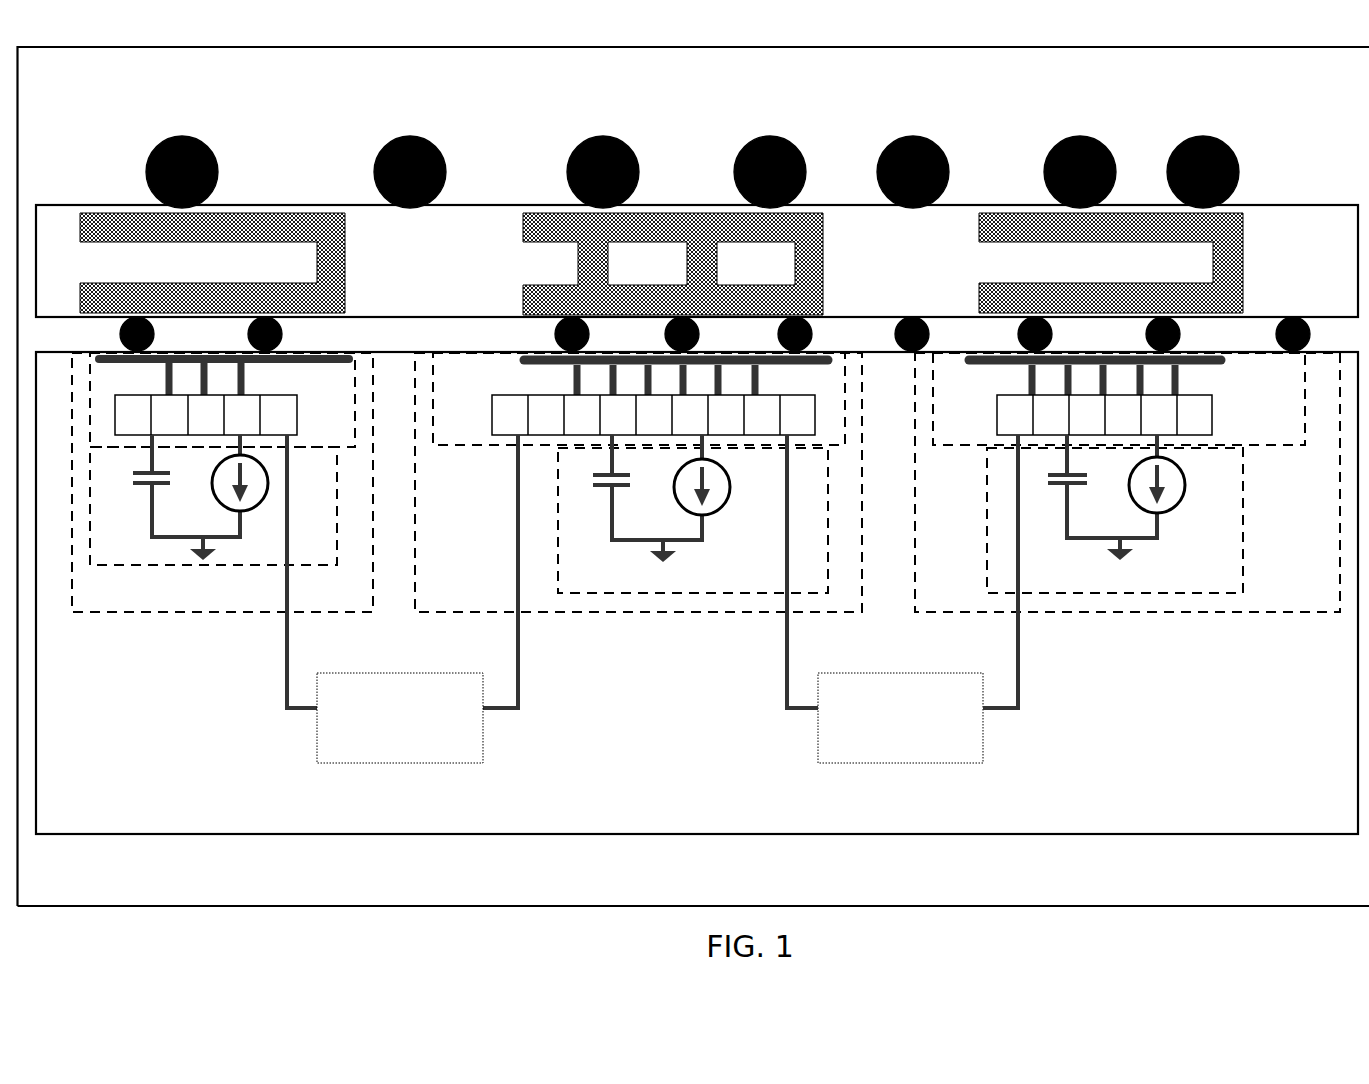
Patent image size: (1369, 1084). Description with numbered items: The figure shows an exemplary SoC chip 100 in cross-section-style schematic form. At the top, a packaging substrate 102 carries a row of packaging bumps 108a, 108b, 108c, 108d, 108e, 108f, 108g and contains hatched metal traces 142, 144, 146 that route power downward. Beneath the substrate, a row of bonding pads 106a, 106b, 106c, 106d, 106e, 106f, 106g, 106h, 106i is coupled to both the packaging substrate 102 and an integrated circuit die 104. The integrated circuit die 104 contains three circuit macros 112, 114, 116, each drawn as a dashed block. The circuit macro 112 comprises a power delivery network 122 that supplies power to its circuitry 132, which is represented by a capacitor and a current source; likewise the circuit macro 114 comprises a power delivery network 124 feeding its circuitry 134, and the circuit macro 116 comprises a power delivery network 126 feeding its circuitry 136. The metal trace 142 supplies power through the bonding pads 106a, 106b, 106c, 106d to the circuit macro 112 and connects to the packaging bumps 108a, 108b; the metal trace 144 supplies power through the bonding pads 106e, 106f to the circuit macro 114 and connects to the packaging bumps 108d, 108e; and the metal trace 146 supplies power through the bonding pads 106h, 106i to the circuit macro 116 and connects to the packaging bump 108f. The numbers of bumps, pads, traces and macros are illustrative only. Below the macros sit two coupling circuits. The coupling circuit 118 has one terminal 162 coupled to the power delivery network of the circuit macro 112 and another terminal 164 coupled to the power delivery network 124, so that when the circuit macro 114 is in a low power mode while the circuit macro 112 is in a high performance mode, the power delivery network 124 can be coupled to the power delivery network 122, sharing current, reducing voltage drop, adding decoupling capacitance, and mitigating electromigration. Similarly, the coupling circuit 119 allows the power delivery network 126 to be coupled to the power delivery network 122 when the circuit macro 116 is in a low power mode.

The SoC chip 100 is at (683, 891).
The packaging substrate 102 is at (886, 284).
The integrated circuit die 104 is at (683, 810).
The bonding pad 106a is at (554, 334).
The bonding pad 106b is at (664, 334).
The bonding pad 106c is at (777, 334).
The bonding pad 106d is at (894, 334).
The bonding pad 106e is at (1017, 334).
The bonding pad 106f is at (1145, 334).
The bonding pad 106g is at (1275, 334).
The bonding pad 106h is at (119, 334).
The bonding pad 106i is at (247, 334).
The packaging bump 108a is at (607, 137).
The packaging bump 108b is at (774, 137).
The packaging bump 108c is at (917, 137).
The packaging bump 108d is at (1084, 137).
The packaging bump 108e is at (1207, 137).
The packaging bump 108f is at (186, 137).
The packaging bump 108g is at (414, 137).
The circuit macro 112 is at (473, 591).
The circuit macro 114 is at (1264, 583).
The circuit macro 116 is at (321, 601).
The coupling circuit 118 is at (881, 744).
The coupling circuit 119 is at (381, 744).
The power delivery network 122 is at (444, 426).
The power delivery network 124 is at (1236, 424).
The power delivery network 126 is at (304, 424).
The circuitry 132 is at (723, 573).
The circuitry 134 is at (1183, 564).
The circuitry 136 is at (286, 548).
The metal trace 142 is at (521, 257).
The metal trace 144 is at (1246, 250).
The metal trace 146 is at (347, 248).
The terminal 162 is at (784, 638).
The terminal 164 is at (1021, 638).